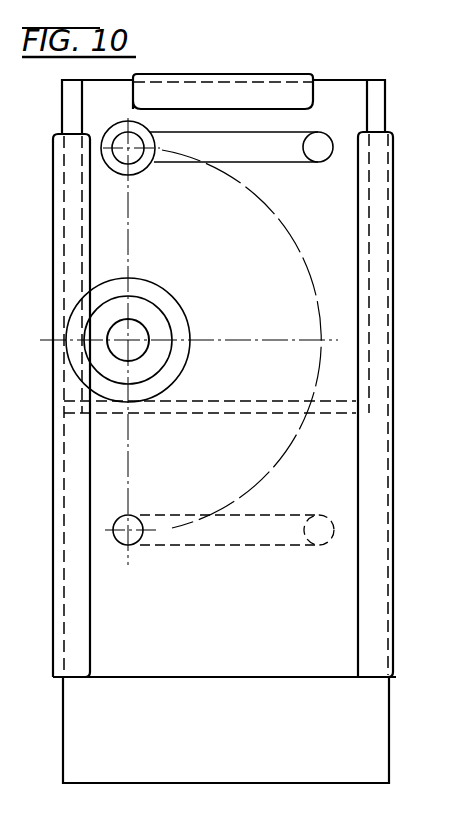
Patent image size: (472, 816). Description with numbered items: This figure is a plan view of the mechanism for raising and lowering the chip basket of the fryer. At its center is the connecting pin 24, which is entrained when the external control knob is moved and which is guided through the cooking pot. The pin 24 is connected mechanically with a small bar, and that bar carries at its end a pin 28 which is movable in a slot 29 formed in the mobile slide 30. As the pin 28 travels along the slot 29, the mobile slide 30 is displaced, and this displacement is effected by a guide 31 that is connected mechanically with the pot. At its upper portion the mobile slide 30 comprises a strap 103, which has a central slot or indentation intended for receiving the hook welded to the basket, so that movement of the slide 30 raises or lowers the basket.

The connecting pin 24 is at (140, 333).
The pin 28 is at (137, 155).
The slot 29 is at (278, 148).
The mobile slide 30 is at (348, 112).
The guide 31 is at (379, 278).
The strap 103 is at (259, 90).